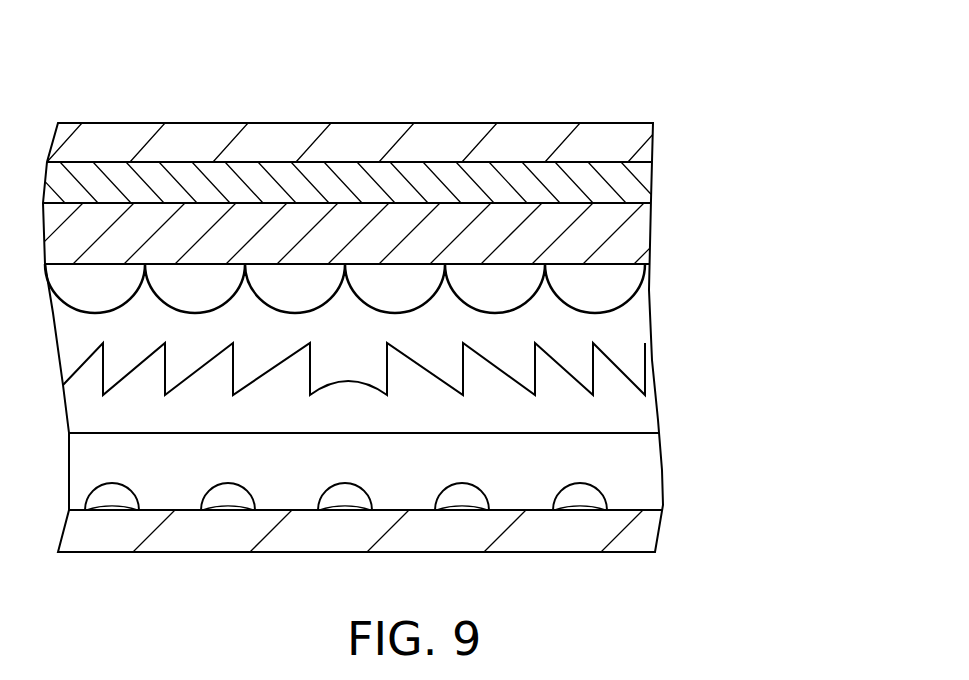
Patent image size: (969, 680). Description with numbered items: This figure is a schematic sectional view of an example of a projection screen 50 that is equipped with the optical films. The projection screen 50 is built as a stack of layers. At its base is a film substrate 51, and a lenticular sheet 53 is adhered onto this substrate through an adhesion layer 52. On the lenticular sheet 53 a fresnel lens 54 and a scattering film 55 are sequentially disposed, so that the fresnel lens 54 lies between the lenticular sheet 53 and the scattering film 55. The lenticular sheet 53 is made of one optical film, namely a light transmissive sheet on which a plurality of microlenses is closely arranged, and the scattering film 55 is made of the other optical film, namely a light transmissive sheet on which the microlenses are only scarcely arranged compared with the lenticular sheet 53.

The projection screen 50 is at (614, 67).
The film substrate 51 is at (627, 145).
The adhesion layer 52 is at (627, 182).
The lenticular sheet 53 is at (448, 258).
The fresnel lens 54 is at (652, 415).
The scattering film 55 is at (461, 506).